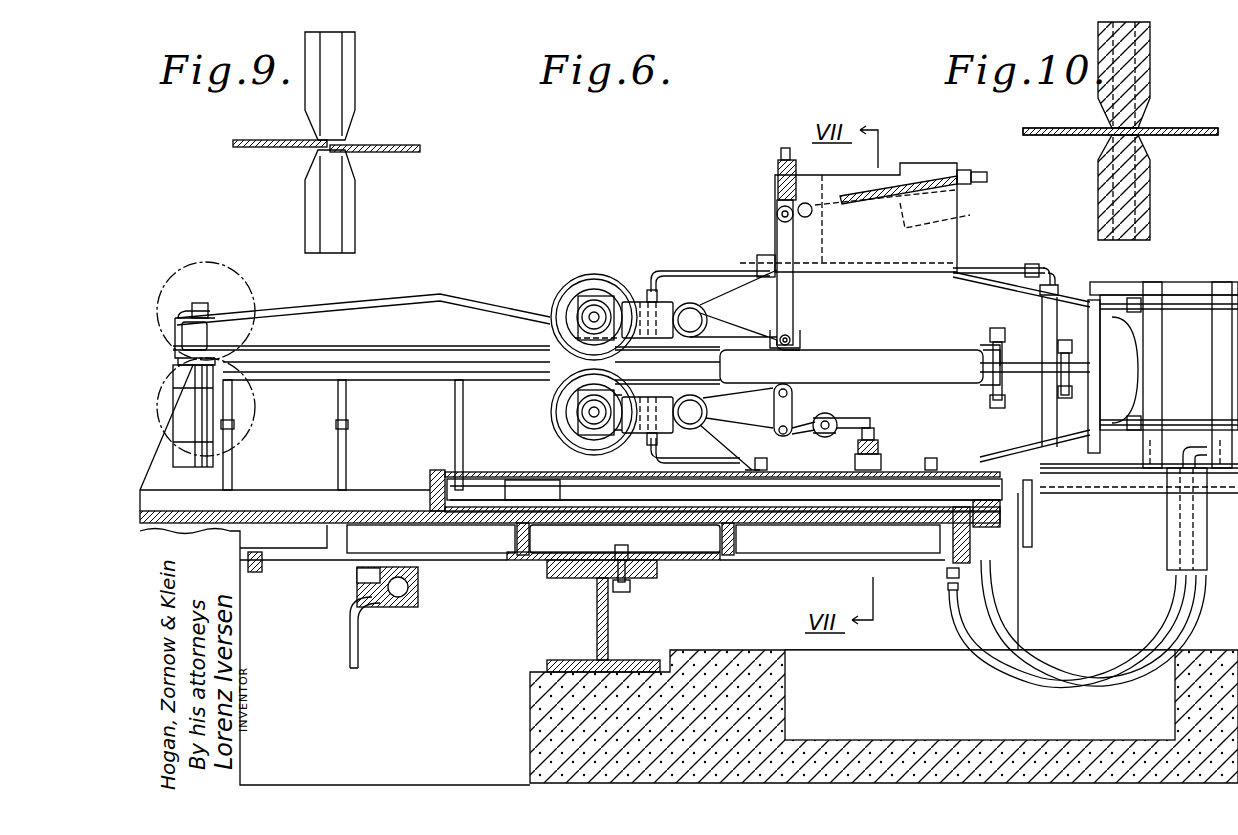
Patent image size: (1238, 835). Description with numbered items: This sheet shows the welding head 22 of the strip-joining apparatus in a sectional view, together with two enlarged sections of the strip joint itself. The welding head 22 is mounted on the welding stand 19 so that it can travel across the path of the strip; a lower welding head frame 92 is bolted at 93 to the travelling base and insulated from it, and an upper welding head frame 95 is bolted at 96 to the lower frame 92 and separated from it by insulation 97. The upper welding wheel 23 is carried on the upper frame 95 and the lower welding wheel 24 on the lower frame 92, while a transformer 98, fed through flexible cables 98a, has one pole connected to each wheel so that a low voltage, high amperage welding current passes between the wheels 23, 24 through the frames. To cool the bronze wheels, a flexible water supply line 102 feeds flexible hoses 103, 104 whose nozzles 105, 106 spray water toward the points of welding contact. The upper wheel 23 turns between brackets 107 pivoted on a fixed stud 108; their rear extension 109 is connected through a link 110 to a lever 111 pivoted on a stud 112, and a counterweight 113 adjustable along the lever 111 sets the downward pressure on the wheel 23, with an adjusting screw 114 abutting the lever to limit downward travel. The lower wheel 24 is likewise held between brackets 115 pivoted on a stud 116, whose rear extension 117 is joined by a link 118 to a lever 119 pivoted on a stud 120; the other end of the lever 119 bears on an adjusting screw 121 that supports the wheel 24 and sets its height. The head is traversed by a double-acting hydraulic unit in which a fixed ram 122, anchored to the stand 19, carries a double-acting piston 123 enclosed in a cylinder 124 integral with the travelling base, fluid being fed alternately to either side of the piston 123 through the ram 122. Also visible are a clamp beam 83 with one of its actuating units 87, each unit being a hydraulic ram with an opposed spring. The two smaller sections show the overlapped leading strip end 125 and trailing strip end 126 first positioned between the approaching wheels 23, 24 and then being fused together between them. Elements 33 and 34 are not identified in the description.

In FIG. 6, the welding stand 19 is at (1028, 540).
In FIG. 6, the welding head 22 is at (690, 193).
In FIG. 9, the upper welding wheel 23 is at (355, 68).
In FIG. 10, the upper welding wheel 23 is at (1150, 52).
In FIG. 6, the upper welding wheel 23 is at (590, 275).
In FIG. 9, the lower welding wheel 24 is at (355, 213).
In FIG. 10, the lower welding wheel 24 is at (1150, 207).
In FIG. 6, the lower welding wheel 24 is at (553, 420).
In FIG. 6, the frame member 33 is at (255, 575).
In FIG. 6, the I-beam support 34 is at (609, 620).
In FIG. 6, the beam 83 is at (395, 312).
In FIG. 6, the actuating unit 87 is at (185, 410).
In FIG. 6, the lower welding head frame 92 is at (1060, 435).
In FIG. 6, the bolts 93 is at (931, 458).
In FIG. 6, the upper welding head frame 95 is at (950, 300).
In FIG. 6, the bolts 96 is at (1035, 332).
In FIG. 6, the insulation 97 is at (1035, 385).
In FIG. 6, the transformer 98 is at (1180, 320).
In FIG. 6, the flexible cables 98a is at (985, 568).
In FIG. 6, the flexible water supply line 102 is at (960, 630).
In FIG. 6, the flexible hose 103 is at (686, 265).
In FIG. 6, the flexible hose 104 is at (690, 450).
In FIG. 6, the nozzle 105 is at (575, 338).
In FIG. 6, the nozzle 106 is at (560, 400).
In FIG. 6, the brackets 107 is at (630, 300).
In FIG. 6, the fixed stud 108 is at (706, 312).
In FIG. 6, the rear extension 109 is at (780, 322).
In FIG. 6, the link 110 is at (782, 240).
In FIG. 6, the lever 111 is at (822, 203).
In FIG. 6, the stud 112 is at (818, 218).
In FIG. 6, the counterweight 113 is at (922, 170).
In FIG. 6, the adjusting screw 114 is at (777, 162).
In FIG. 6, the brackets 115 is at (653, 390).
In FIG. 6, the stud 116 is at (708, 408).
In FIG. 6, the rear extension 117 is at (762, 382).
In FIG. 6, the link 118 is at (810, 403).
In FIG. 6, the lever 119 is at (803, 432).
In FIG. 6, the stud 120 is at (830, 418).
In FIG. 6, the adjusting screw 121 is at (878, 436).
In FIG. 6, the fixed ram 122 is at (608, 490).
In FIG. 6, the double-acting piston 123 is at (520, 478).
In FIG. 6, the cylinder 124 is at (640, 508).
In FIG. 9, the leading strip end 125 is at (268, 147).
In FIG. 10, the leading strip end 125 is at (1055, 137).
In FIG. 9, the trailing strip end 126 is at (418, 133).
In FIG. 10, the trailing strip end 126 is at (1205, 112).